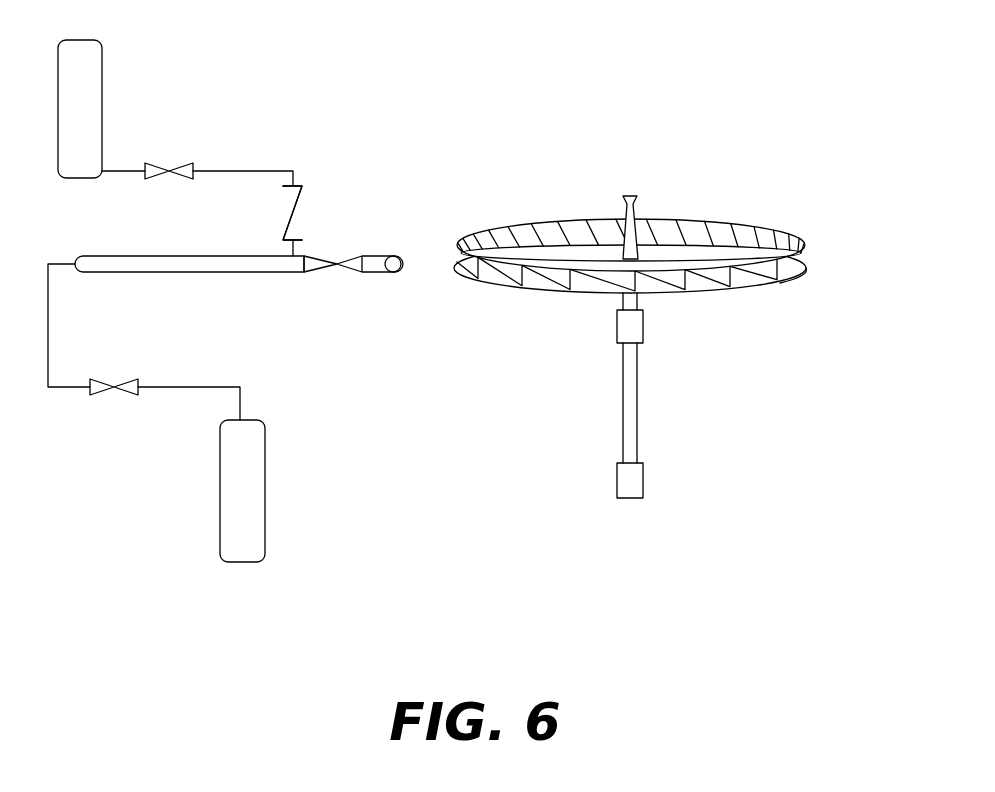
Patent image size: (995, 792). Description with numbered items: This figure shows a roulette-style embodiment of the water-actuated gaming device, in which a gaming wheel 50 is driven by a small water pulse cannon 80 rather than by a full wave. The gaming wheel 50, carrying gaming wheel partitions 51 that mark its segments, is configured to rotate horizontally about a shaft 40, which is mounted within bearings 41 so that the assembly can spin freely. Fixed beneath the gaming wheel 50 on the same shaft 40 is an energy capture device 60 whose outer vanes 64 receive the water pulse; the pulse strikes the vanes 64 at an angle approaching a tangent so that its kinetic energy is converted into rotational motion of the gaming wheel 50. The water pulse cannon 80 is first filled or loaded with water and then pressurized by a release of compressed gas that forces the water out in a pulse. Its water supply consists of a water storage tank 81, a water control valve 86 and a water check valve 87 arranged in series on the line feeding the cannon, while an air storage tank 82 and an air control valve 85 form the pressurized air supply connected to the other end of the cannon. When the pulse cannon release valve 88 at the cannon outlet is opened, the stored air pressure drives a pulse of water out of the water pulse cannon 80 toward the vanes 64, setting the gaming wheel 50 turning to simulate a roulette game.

The water storage tank 81 is at (102, 90).
The water control valve 86 is at (183, 163).
The water check valve 87 is at (312, 195).
The water pulse cannon 80 is at (288, 273).
The pulse cannon release valve 88 is at (342, 282).
The air control valve 85 is at (133, 380).
The air storage tank 82 is at (265, 524).
The gaming wheel 50 is at (757, 256).
The gaming wheel partition 51 is at (573, 220).
The vane 64 is at (805, 268).
The energy capture device 60 is at (750, 292).
The shaft 40 is at (637, 420).
The bearing 41 is at (643, 338).